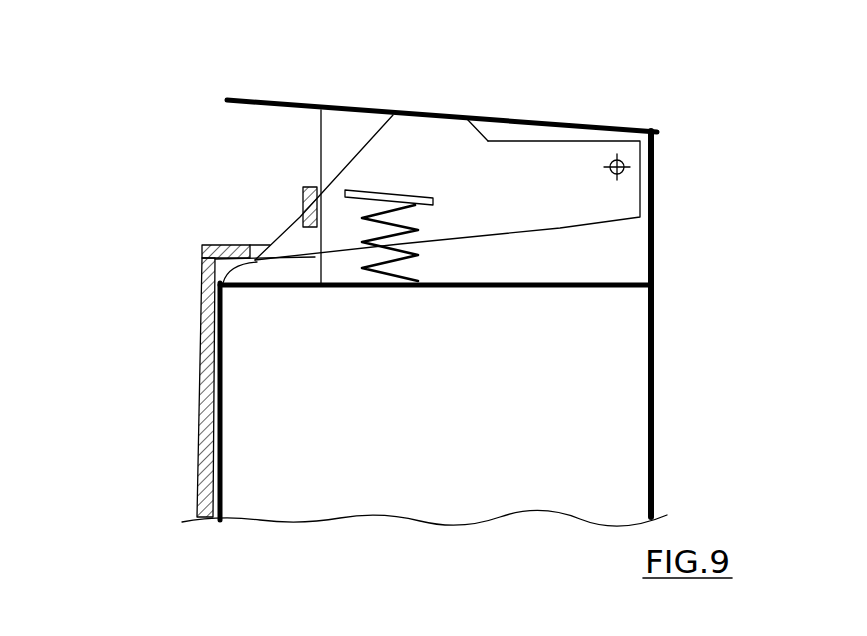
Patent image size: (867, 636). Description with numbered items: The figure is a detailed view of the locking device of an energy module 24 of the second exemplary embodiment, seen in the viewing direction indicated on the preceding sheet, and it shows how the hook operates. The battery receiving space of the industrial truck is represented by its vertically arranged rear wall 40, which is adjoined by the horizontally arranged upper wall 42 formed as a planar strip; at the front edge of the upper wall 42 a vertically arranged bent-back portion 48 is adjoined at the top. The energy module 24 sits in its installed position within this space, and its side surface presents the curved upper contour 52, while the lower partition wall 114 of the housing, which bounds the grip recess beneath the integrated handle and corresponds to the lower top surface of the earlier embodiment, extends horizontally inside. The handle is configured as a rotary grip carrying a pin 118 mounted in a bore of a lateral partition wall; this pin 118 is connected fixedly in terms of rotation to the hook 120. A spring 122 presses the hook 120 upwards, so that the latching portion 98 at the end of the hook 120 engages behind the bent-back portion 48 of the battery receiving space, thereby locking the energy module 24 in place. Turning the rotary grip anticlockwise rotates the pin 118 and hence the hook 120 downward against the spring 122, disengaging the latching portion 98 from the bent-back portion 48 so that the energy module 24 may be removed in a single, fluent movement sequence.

The hook 120 is at (430, 135).
The spring 122 is at (417, 200).
The pin 118 is at (620, 160).
The lower partition wall 114 is at (603, 283).
The bent-back portion 48 is at (302, 192).
The latching portion 98 is at (298, 218).
The upper wall 42 is at (223, 245).
The curved upper contour 52 is at (203, 263).
The rear wall 40 is at (207, 380).
The energy module 24 is at (300, 472).